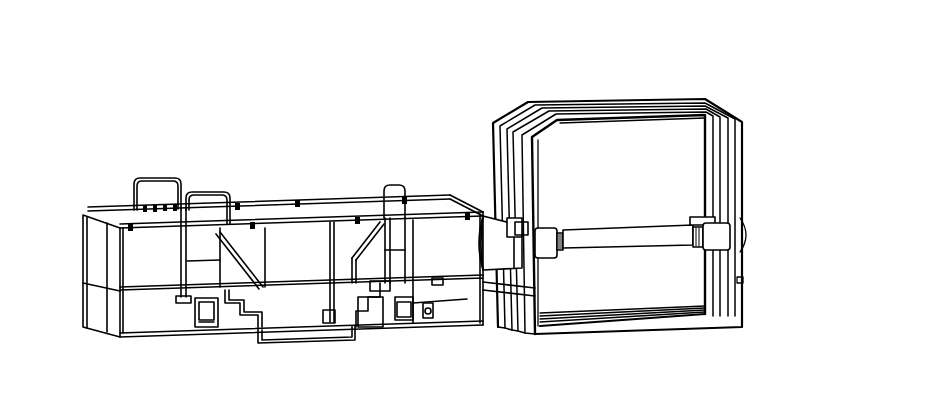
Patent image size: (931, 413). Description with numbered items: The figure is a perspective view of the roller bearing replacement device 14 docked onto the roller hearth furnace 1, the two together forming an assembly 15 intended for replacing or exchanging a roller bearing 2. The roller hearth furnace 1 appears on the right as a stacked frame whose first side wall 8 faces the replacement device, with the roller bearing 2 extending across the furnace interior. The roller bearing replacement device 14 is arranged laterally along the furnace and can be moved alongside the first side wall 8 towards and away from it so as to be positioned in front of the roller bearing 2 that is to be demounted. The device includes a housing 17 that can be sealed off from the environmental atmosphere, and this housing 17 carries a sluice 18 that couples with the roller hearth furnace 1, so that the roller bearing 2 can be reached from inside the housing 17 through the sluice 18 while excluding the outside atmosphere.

The roller hearth furnace 1 is at (612, 92).
The roller bearing 2 is at (617, 233).
The first side wall 8 is at (517, 148).
The roller bearing replacement device 14 is at (293, 169).
The assembly 15 is at (595, 38).
The housing 17 is at (170, 318).
The sluice 18 is at (492, 211).